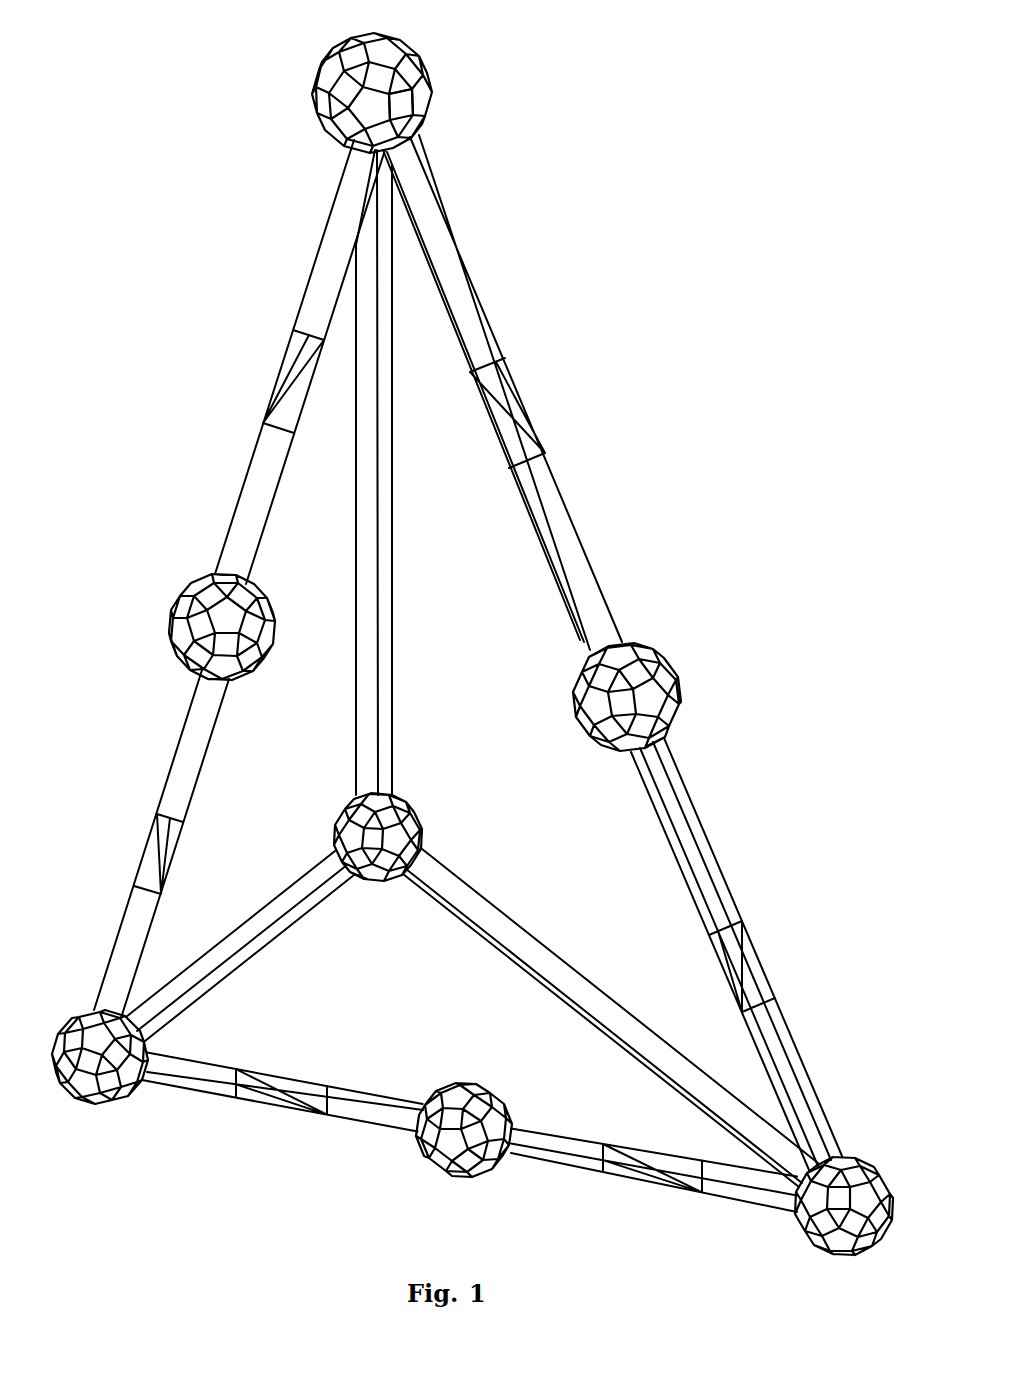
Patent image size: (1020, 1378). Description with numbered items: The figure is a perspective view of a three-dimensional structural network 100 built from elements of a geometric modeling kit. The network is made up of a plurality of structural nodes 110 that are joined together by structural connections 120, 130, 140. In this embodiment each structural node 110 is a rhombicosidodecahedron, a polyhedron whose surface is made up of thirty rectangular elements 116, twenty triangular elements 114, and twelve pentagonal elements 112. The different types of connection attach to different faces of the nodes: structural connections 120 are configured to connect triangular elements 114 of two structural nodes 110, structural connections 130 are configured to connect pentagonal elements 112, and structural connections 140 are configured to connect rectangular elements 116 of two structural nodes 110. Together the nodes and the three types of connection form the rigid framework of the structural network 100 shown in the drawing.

The three-dimensional structural network 100 is at (634, 296).
The structural node 110 is at (684, 672).
The pentagonal element 112 is at (395, 70).
The triangular element 114 is at (410, 101).
The rectangular element 116 is at (396, 106).
The structural connection 120 is at (236, 492).
The structural connection 130 is at (566, 501).
The structural connection 140 is at (397, 690).